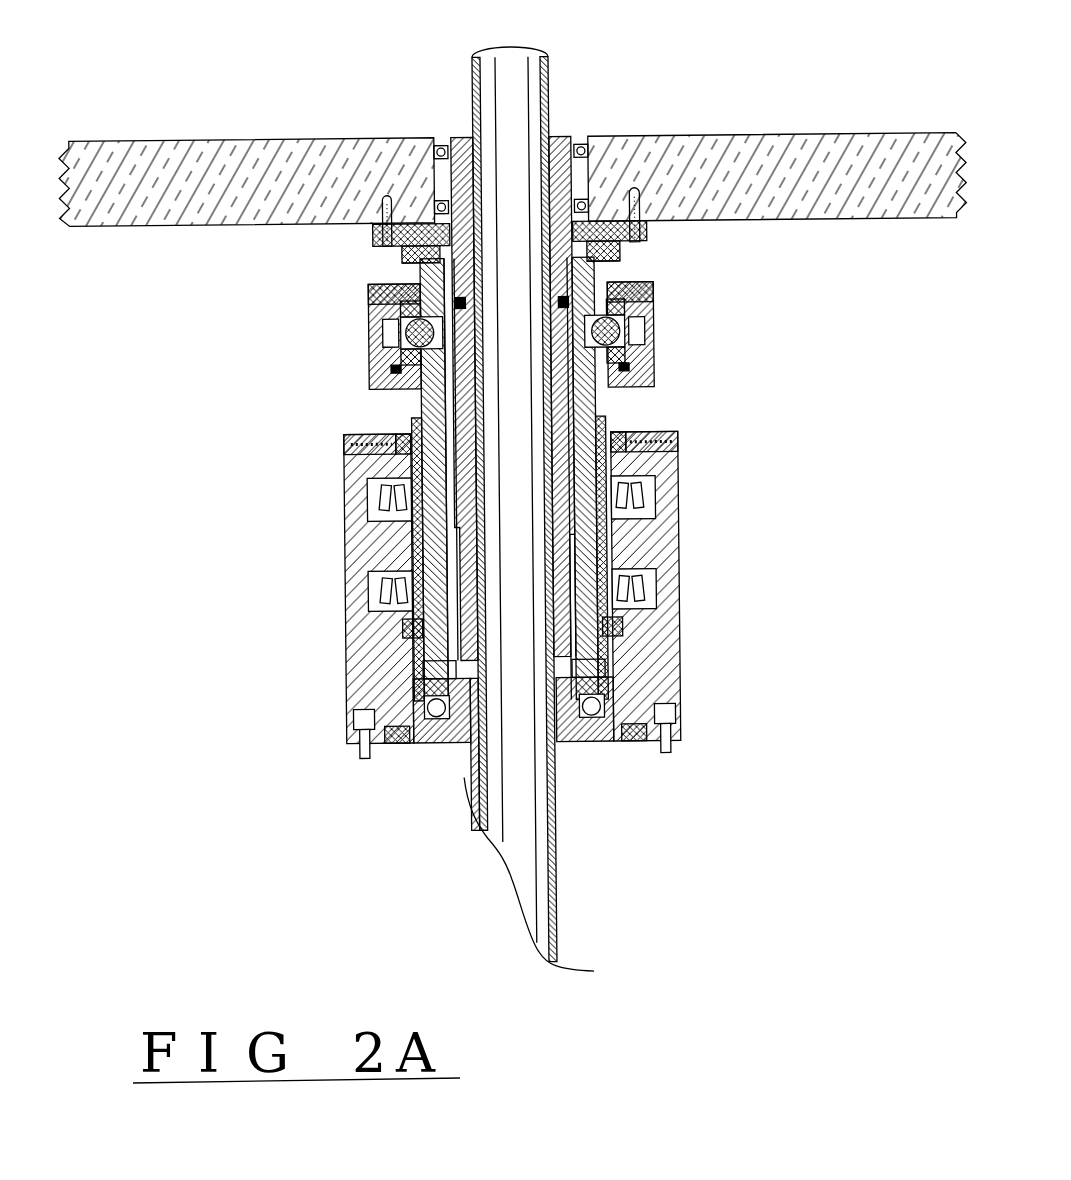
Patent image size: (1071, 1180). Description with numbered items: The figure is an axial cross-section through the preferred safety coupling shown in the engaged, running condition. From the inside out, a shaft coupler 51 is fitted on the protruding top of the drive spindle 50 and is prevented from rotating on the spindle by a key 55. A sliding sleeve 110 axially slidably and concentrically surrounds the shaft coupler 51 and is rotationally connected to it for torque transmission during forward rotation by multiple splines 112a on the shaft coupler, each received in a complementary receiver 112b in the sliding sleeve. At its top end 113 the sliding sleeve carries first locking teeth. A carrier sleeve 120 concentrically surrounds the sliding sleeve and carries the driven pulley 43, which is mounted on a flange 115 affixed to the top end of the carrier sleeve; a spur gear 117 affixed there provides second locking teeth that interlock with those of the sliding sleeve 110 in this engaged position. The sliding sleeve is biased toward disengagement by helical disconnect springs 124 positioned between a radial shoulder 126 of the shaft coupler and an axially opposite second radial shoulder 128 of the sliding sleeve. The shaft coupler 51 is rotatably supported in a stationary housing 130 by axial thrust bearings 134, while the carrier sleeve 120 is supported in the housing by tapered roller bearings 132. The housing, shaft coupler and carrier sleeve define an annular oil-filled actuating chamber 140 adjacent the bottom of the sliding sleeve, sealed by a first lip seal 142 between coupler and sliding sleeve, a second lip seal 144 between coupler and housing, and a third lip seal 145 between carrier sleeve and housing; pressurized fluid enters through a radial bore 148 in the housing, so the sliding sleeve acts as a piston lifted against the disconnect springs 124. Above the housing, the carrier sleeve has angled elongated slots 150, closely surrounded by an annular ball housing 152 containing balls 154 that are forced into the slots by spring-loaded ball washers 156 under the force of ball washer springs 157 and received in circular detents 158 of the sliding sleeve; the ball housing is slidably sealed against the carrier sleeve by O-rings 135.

The drive spindle 50 is at (536, 51).
The shaft coupler 51 is at (553, 133).
The driven pulley 43 is at (702, 135).
The flange 115 is at (647, 222).
The spur gear 117 is at (645, 242).
The top end of the sliding sleeve 113 is at (640, 262).
The O-rings 135 is at (420, 386).
The disconnect springs 124 is at (368, 295).
The elongated slots 150 is at (653, 322).
The balls 154 is at (640, 337).
The spring-loaded ball washers 156 is at (372, 330).
The ball washer springs 157 is at (653, 372).
The ball housing 152 is at (605, 398).
The sliding sleeve 110 is at (595, 405).
The carrier sleeve 120 is at (402, 253).
The tapered roller bearings 132 is at (640, 490).
The stationary housing 130 is at (640, 510).
The splines 112a is at (640, 531).
The third lip seal 145 is at (602, 622).
The actuating chamber 140 is at (600, 668).
The radial bore 148 is at (600, 665).
The axial thrust bearings 134 is at (615, 700).
The second lip seal 144 is at (645, 727).
The radial shoulder 126 is at (397, 275).
The second radial shoulder 128 is at (367, 315).
The circular detents 158 is at (375, 353).
The first lip seal 142 is at (368, 378).
The complementary receiver 112b is at (418, 537).
The key 55 is at (472, 762).